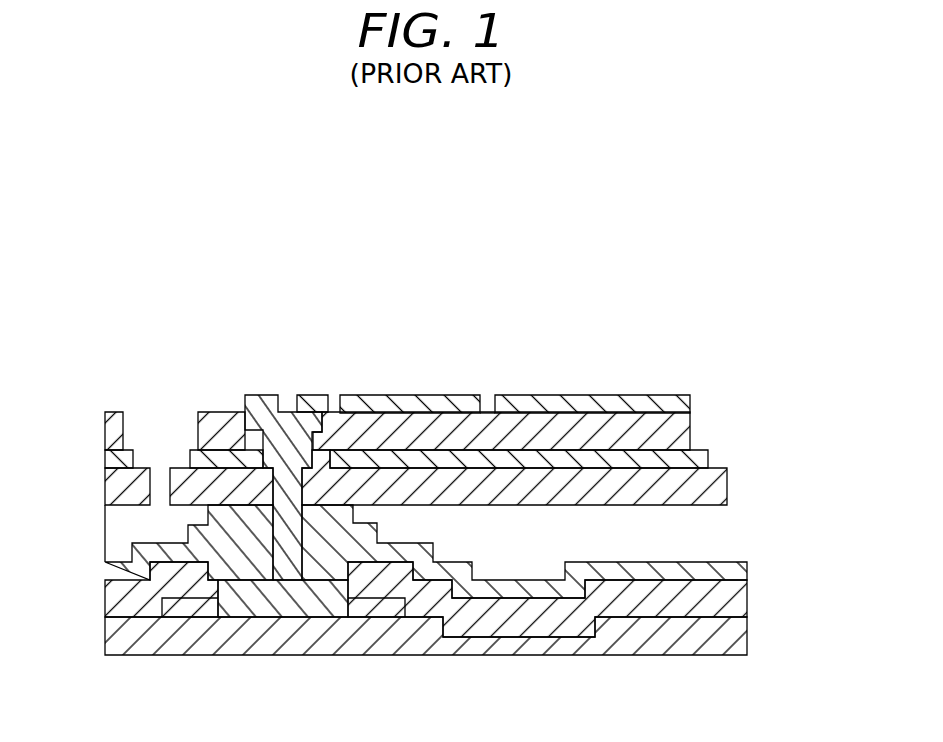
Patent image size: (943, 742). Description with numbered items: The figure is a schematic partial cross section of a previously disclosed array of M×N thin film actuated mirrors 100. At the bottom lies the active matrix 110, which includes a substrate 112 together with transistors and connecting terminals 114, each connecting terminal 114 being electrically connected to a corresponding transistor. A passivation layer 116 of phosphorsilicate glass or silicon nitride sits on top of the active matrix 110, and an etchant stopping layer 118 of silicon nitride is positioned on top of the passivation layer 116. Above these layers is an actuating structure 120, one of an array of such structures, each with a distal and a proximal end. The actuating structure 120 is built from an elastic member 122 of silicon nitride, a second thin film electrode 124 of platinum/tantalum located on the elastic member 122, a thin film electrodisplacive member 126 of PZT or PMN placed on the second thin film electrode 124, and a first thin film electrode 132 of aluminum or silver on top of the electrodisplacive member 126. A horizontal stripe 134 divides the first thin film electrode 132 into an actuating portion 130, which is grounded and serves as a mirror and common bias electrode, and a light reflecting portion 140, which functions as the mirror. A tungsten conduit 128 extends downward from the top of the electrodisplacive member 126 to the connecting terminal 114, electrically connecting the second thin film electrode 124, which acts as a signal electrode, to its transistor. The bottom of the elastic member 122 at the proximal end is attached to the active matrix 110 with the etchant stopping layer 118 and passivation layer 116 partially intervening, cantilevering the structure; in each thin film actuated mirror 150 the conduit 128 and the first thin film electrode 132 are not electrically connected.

The array of M×N thin film actuated mirrors 100 is at (685, 131).
The active matrix 110 is at (97, 578).
The substrate 112 is at (735, 640).
The connecting terminal 114 is at (276, 598).
The passivation layer 116 is at (735, 601).
The etchant stopping layer 118 is at (735, 567).
The actuating structure 120 is at (97, 393).
The elastic member 122 is at (705, 481).
The second thin film electrode 124 is at (702, 462).
The thin film electrodisplacive member 126 is at (675, 432).
The conduit 128 is at (258, 404).
The actuating portion 130 is at (342, 308).
The first thin film electrode 132 is at (389, 400).
The horizontal stripe 134 is at (486, 408).
The light reflecting portion 140 is at (492, 308).
The thin film actuated mirror 150 is at (692, 235).